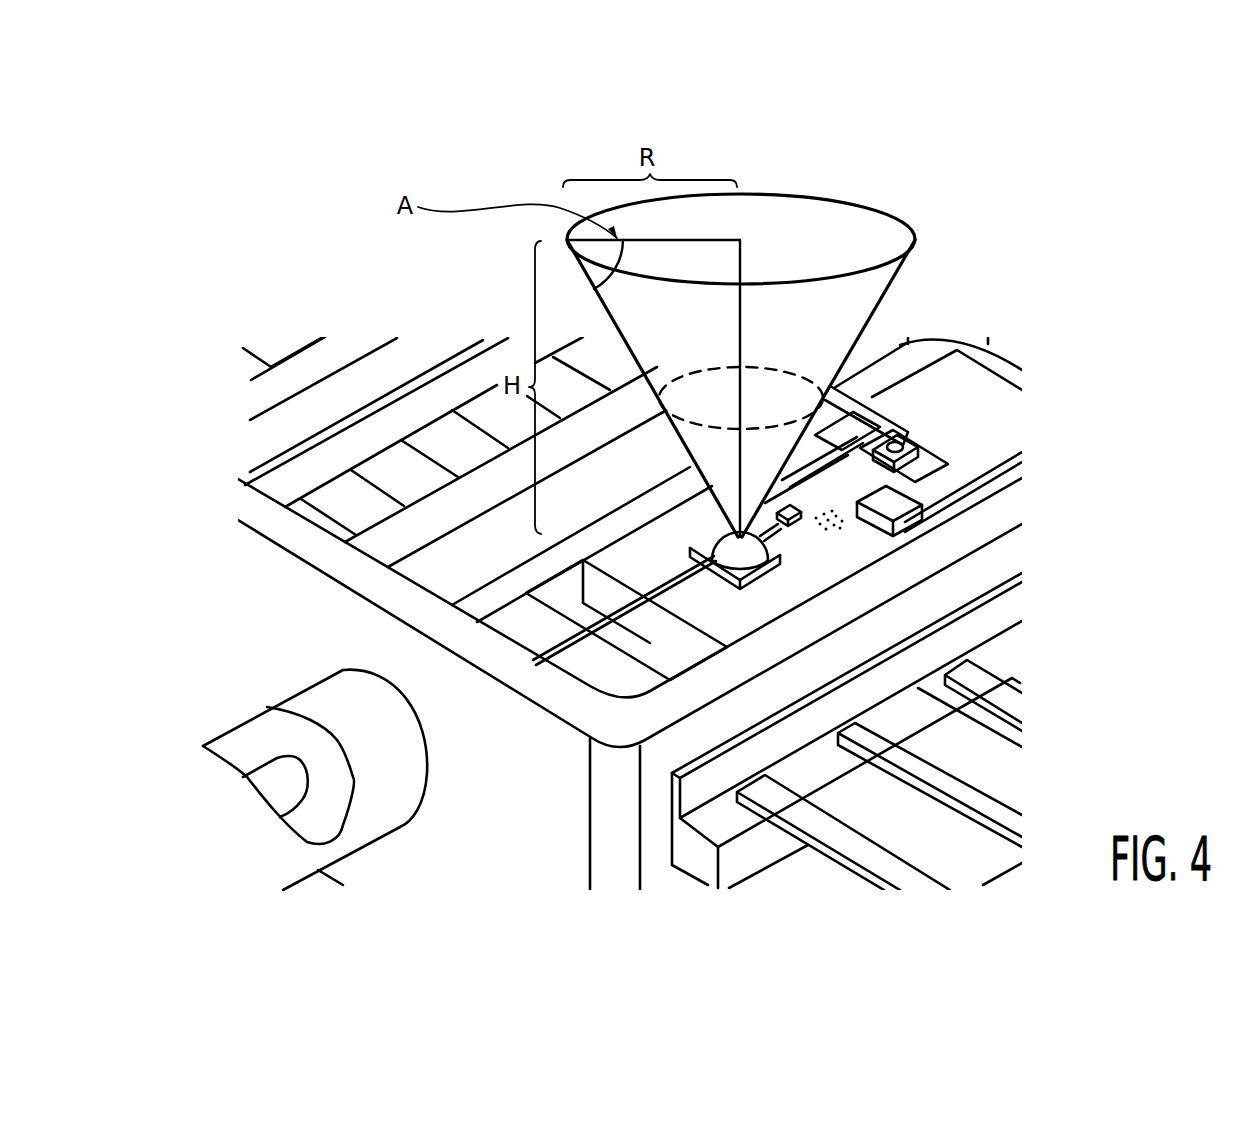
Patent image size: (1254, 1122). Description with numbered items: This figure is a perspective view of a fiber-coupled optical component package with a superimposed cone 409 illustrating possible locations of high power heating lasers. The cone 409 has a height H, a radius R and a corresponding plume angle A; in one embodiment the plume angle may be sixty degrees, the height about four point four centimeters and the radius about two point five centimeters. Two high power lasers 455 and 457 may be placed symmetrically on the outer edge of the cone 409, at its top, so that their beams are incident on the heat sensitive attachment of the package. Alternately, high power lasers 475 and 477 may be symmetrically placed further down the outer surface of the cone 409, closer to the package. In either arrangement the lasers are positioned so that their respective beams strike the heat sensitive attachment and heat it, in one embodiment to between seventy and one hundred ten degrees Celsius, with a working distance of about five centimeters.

The cone 409 is at (899, 220).
The high power laser 455 is at (748, 194).
The high power laser 475 is at (660, 393).
The high power laser 457 is at (743, 286).
The high power laser 477 is at (818, 390).